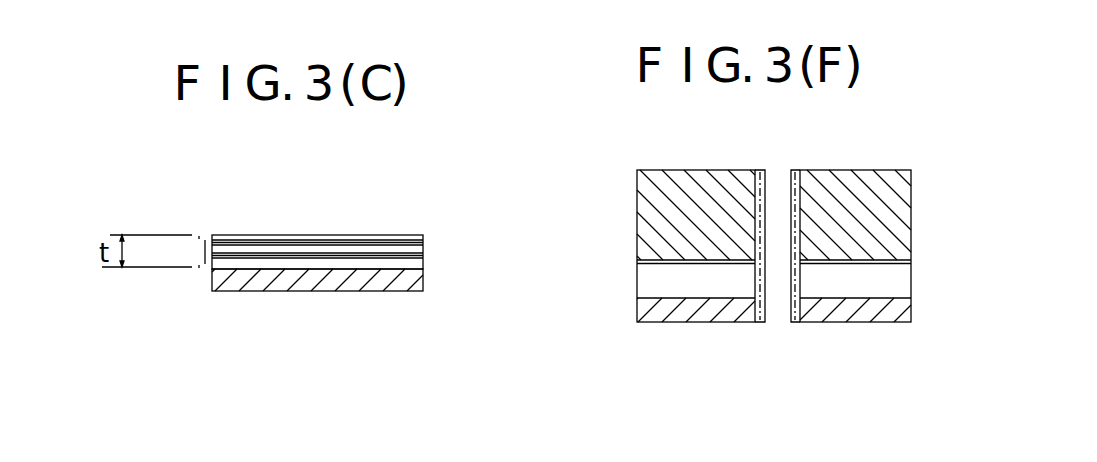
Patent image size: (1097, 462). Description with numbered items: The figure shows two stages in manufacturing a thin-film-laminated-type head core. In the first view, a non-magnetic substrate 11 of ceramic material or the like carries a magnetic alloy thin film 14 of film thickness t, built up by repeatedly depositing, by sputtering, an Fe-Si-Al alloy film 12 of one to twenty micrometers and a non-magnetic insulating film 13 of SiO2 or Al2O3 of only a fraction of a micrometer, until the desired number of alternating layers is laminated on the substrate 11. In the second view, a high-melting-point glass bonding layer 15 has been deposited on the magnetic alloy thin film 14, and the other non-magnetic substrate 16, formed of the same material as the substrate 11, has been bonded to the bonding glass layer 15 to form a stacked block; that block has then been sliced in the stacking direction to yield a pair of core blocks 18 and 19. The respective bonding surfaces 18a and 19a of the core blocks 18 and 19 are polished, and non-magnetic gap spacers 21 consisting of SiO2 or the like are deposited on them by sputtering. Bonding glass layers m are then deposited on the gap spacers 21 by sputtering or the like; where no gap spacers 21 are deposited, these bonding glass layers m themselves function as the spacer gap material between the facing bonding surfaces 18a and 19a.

In FIG. 3C, the non-magnetic substrate 11 is at (417, 285).
The non-magnetic substrate 11 is at (897, 317).
In FIG. 3C, the Fe-Si-Al alloy film 12 is at (411, 237).
In FIG. 3C, the non-magnetic insulating film 13 is at (421, 239).
In FIG. 3C, the magnetic alloy thin film 14 is at (295, 252).
The magnetic alloy thin film 14 is at (646, 287).
The high-melting-point glass bonding layer 15 is at (646, 265).
The non-magnetic substrate 16 is at (888, 178).
The core block 18 is at (672, 331).
The bonding surface 18a is at (768, 312).
The core block 19 is at (856, 333).
The bonding surface 19a is at (788, 312).
The non-magnetic gap spacer 21 is at (793, 187).
The bonding glass layer m is at (789, 299).